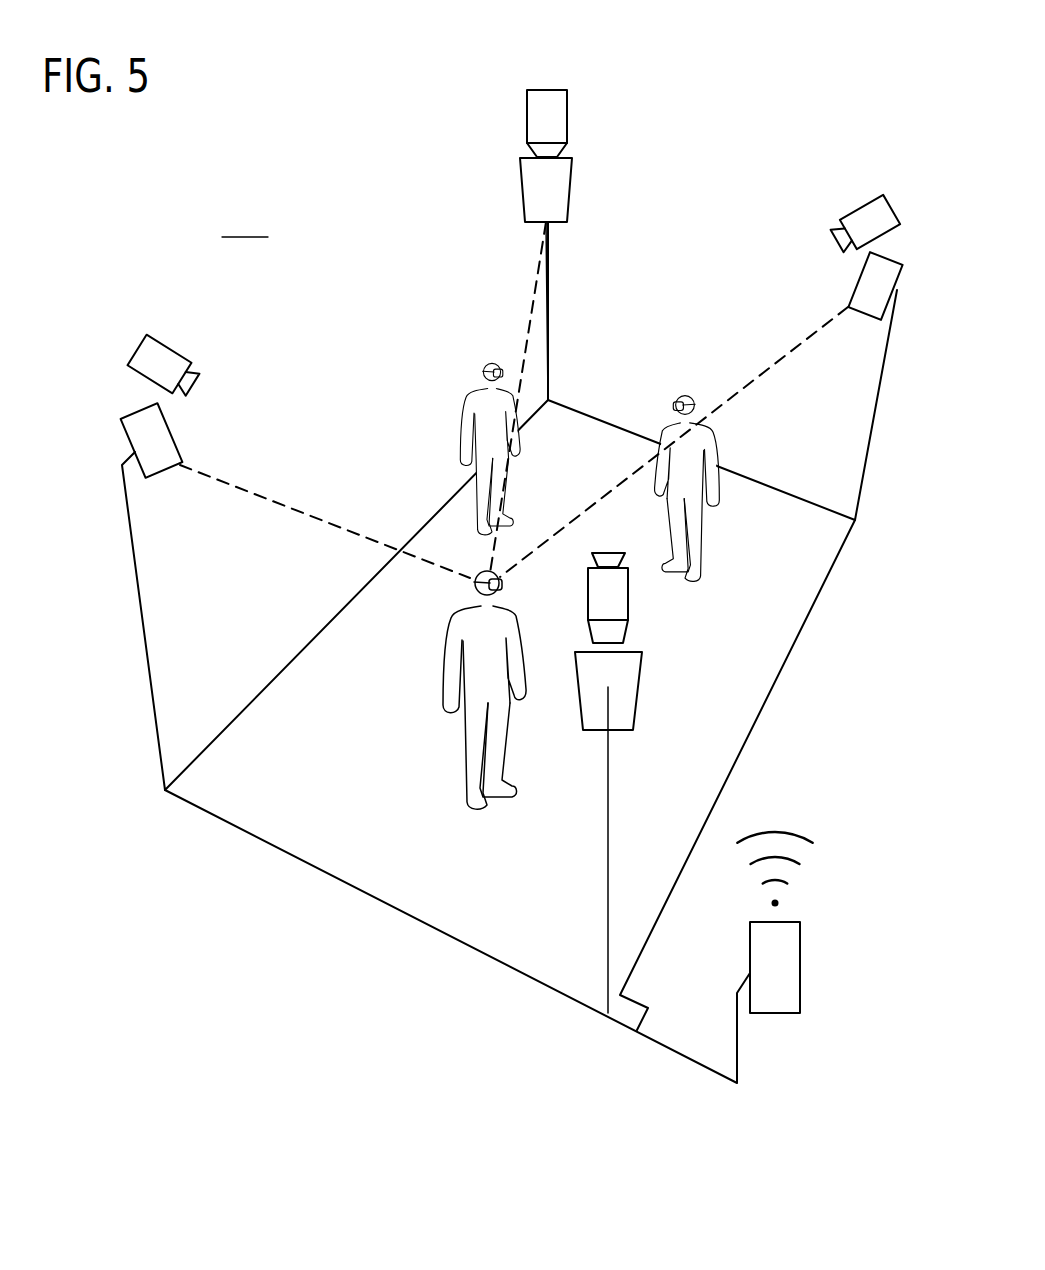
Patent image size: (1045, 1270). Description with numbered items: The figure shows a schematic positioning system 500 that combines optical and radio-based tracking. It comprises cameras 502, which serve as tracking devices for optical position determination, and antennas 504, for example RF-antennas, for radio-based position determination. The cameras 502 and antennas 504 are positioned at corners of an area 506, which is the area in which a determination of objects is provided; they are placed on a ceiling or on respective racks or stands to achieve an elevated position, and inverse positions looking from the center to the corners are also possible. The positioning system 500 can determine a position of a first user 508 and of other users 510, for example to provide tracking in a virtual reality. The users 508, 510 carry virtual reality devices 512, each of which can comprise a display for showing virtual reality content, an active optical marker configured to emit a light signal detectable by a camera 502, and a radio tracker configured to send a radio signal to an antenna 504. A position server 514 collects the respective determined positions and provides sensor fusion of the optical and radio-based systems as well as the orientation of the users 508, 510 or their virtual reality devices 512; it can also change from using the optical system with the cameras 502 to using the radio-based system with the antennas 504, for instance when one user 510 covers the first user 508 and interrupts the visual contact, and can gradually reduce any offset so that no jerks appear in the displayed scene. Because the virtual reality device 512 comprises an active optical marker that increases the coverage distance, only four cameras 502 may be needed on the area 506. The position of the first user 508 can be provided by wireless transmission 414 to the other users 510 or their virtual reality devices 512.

The positioning system 500 is at (245, 221).
The camera 502 is at (527, 111).
The antenna 504 is at (521, 185).
The area 506 is at (242, 740).
The first user 508 is at (454, 643).
The other user 510 is at (470, 405).
The virtual reality device 512 is at (491, 362).
The position server 514 is at (800, 967).
The wireless transmission 414 is at (800, 827).